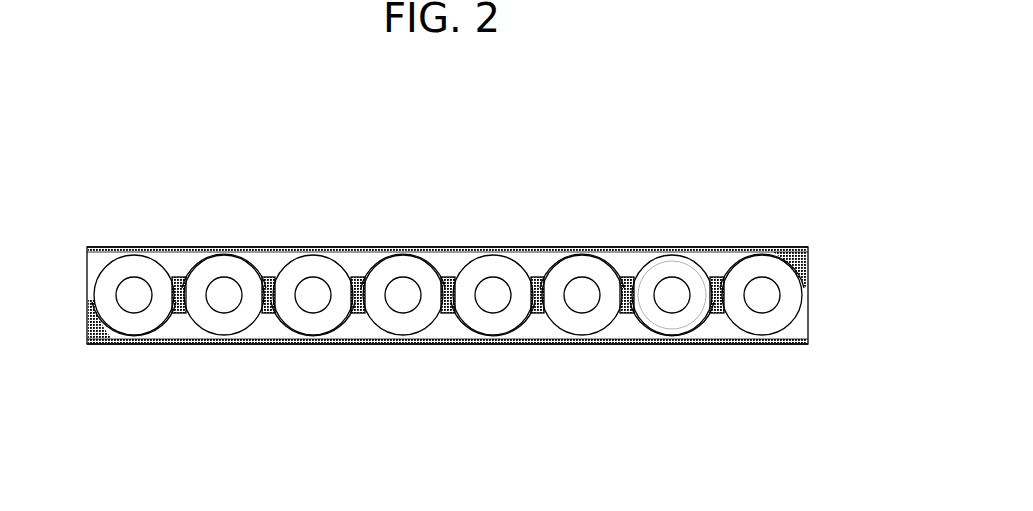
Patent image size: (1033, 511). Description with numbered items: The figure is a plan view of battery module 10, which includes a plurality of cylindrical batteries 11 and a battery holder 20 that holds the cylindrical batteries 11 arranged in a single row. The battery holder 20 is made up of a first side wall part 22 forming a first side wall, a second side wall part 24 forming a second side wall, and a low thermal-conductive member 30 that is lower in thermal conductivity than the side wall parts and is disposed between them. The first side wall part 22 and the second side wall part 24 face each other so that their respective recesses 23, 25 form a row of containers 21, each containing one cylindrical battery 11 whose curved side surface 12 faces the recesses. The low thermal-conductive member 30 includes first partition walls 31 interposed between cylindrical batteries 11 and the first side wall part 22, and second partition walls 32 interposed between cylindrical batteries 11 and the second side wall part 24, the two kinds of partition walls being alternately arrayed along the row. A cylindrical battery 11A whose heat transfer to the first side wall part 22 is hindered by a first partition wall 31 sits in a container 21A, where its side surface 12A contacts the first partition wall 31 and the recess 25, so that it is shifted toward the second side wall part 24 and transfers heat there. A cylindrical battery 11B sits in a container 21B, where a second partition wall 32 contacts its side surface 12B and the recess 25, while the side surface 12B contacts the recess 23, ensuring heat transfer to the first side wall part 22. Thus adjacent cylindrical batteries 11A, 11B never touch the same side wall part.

The battery module 10 is at (780, 95).
The cylindrical battery 11 is at (140, 322).
The cylindrical battery 11A is at (403, 295).
The cylindrical battery 11B is at (493, 295).
The side surface 12 is at (92, 322).
The side surface 12A is at (179, 295).
The side surface 12B is at (268, 295).
The battery holder 20 is at (876, 200).
The container 21 is at (128, 256).
The container 21A is at (403, 339).
The container 21B is at (493, 294).
The first side wall part 22 is at (800, 327).
The recess 23 is at (687, 342).
The second side wall part 24 is at (745, 248).
The recess 25 is at (640, 275).
The low thermal-conductive member 30 is at (810, 270).
The first partition wall 31 is at (487, 344).
The second partition wall 32 is at (404, 246).